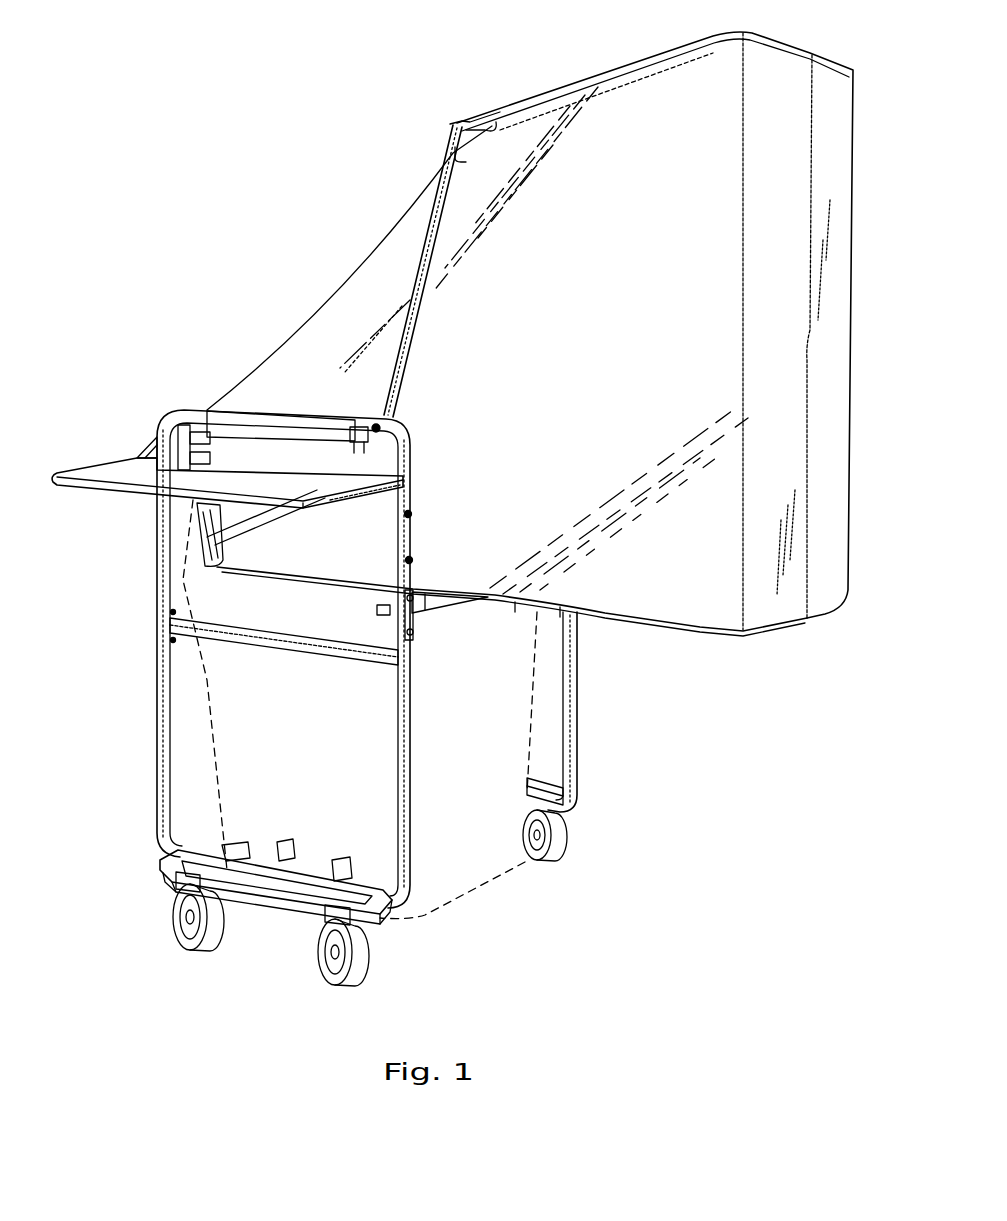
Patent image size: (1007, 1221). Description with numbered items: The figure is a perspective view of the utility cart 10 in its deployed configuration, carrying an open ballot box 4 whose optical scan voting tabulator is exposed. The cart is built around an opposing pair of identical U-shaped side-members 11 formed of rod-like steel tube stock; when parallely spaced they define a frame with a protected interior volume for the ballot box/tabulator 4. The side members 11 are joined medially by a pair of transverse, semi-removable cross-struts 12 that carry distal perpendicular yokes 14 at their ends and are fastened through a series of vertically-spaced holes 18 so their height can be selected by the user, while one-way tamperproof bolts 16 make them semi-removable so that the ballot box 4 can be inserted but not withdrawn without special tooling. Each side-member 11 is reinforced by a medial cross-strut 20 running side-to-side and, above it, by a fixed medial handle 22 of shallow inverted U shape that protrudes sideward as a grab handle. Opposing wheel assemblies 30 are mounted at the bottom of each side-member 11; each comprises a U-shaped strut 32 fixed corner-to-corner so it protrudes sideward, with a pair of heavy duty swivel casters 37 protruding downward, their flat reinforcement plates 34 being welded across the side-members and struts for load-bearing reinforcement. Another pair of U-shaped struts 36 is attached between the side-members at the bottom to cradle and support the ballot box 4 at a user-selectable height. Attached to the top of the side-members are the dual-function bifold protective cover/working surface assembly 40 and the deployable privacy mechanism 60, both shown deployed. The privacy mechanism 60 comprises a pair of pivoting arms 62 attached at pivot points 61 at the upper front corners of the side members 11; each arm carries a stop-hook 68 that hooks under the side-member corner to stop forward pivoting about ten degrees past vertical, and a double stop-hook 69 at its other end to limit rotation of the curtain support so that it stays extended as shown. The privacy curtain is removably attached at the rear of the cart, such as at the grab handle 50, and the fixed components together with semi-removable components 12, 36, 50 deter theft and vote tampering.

The utility cart 10 is at (216, 133).
The grab handle 50 is at (573, 80).
The cross-struts 12 is at (472, 598).
The ballot box 4 is at (510, 667).
The deployable privacy mechanism 60 is at (490, 124).
The double stop-hook 69 is at (470, 132).
The pivoting arms 62 is at (430, 232).
The side-members 11 is at (412, 788).
The pivot points 61 is at (376, 424).
The stop-hook 68 is at (352, 440).
The bifold protective cover/working surface assembly 40 is at (97, 466).
The handle 22 is at (370, 503).
The medial cross-strut 20 is at (245, 645).
The vertically-spaced holes 18 is at (411, 560).
The one-way tamperproof bolts 16 is at (415, 596).
The perpendicular yokes 14 is at (416, 618).
The wheel assemblies 30 is at (132, 879).
The U-shaped strut 32 is at (265, 905).
The flat reinforcement plates 34 is at (222, 858).
The U-shaped struts 36 is at (342, 878).
The casters 37 is at (330, 962).